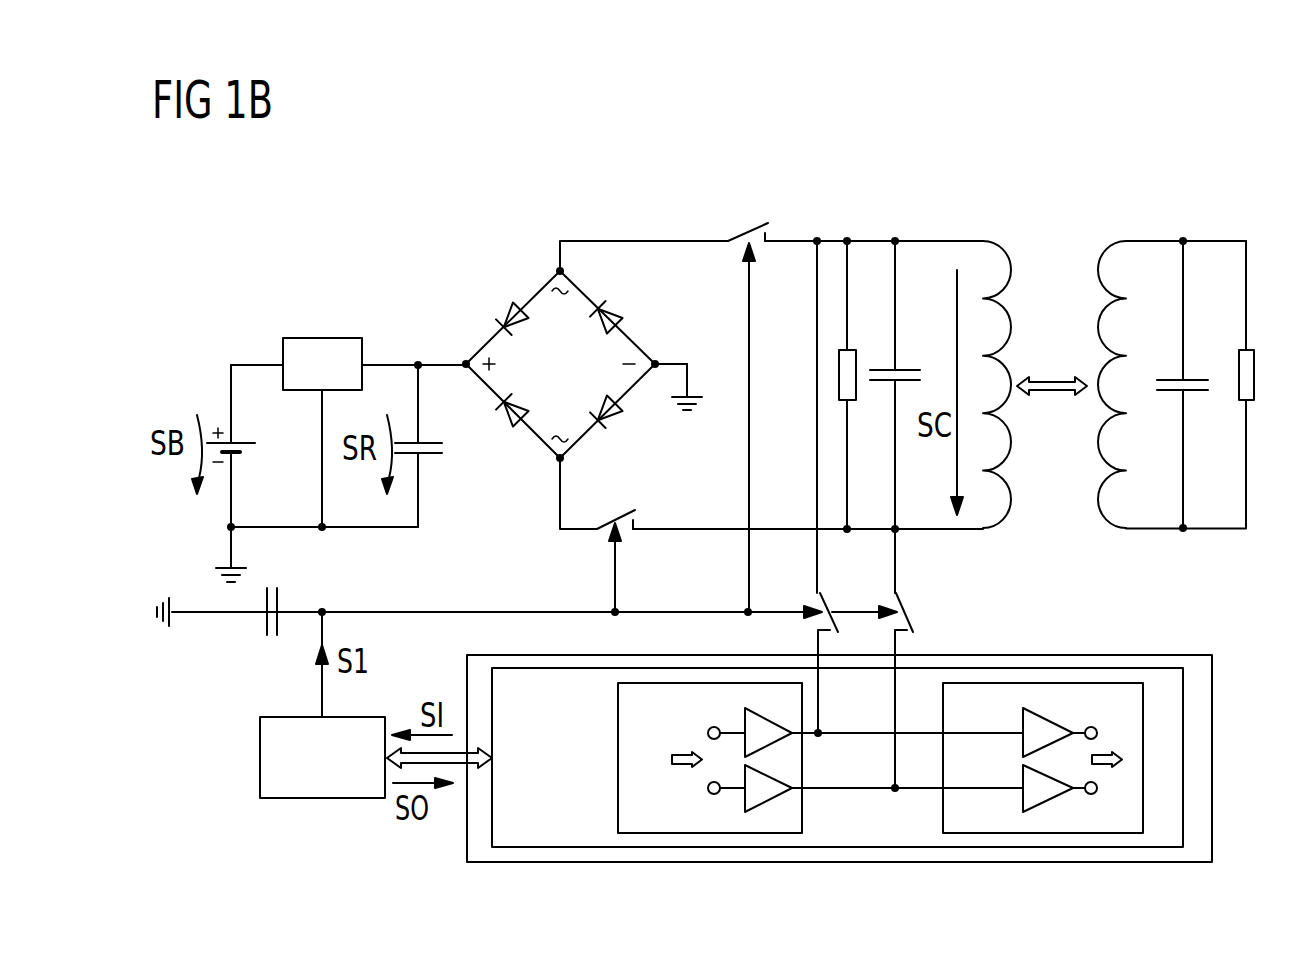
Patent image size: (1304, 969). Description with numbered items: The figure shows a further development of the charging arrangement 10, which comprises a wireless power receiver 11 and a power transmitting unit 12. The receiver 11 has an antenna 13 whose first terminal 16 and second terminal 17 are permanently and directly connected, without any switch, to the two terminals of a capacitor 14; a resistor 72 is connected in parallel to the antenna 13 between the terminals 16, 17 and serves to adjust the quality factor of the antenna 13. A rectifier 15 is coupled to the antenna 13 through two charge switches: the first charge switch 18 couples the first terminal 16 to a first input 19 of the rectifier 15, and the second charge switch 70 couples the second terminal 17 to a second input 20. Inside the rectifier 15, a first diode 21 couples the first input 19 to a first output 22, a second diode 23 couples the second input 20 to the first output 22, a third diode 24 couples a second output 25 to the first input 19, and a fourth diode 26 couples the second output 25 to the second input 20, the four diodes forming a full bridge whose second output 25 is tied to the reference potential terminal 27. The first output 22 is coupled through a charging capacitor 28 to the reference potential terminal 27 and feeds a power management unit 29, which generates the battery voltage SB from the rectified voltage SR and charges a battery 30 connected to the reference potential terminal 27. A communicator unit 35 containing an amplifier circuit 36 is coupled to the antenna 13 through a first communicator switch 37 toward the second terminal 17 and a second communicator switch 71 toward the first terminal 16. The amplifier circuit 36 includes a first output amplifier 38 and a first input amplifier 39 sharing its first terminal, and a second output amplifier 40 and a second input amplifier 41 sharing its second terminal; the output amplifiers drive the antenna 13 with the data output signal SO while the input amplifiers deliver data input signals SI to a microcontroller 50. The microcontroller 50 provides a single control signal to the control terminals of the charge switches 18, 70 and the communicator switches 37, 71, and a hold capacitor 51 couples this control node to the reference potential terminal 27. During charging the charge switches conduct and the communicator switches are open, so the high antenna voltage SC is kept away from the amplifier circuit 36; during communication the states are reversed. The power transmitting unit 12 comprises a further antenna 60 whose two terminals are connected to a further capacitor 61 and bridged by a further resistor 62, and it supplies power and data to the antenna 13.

The charging arrangement 10 is at (1132, 303).
The wireless power receiver 11 is at (1030, 334).
The power transmitting unit 12 is at (1154, 336).
The antenna 13 is at (1009, 259).
The capacitor 14 is at (902, 370).
The rectifier 15 is at (547, 342).
The first terminal of the antenna 16 is at (895, 530).
The second terminal of the antenna 17 is at (895, 241).
The first charge switch 18 is at (622, 515).
The first input of the rectifier 19 is at (558, 458).
The second input of the rectifier 20 is at (560, 271).
The first diode 21 is at (502, 417).
The first output of the rectifier 22 is at (466, 362).
The second diode 23 is at (510, 313).
The third diode 24 is at (612, 418).
The second output of the rectifier 25 is at (657, 362).
The fourth diode 26 is at (600, 320).
The reference potential terminal 27 is at (225, 567).
The charging capacitor 28 is at (428, 456).
The power management unit 29 is at (322, 338).
The battery 30 is at (242, 442).
The communicator unit 35 is at (839, 722).
The amplifier circuit 36 is at (837, 723).
The first communicator switch 37 is at (813, 603).
The first output amplifier 38 is at (743, 720).
The first input amplifier 39 is at (1020, 720).
The second output amplifier 40 is at (743, 802).
The second input amplifier 41 is at (1020, 802).
The microcontroller 50 is at (260, 758).
The hold capacitor 51 is at (272, 638).
The further antenna 60 is at (1097, 503).
The further capacitor 61 is at (1196, 378).
The further resistor 62 is at (1250, 350).
The second charge switch 70 is at (755, 227).
The second communicator switch 71 is at (880, 603).
The resistor 72 is at (850, 350).